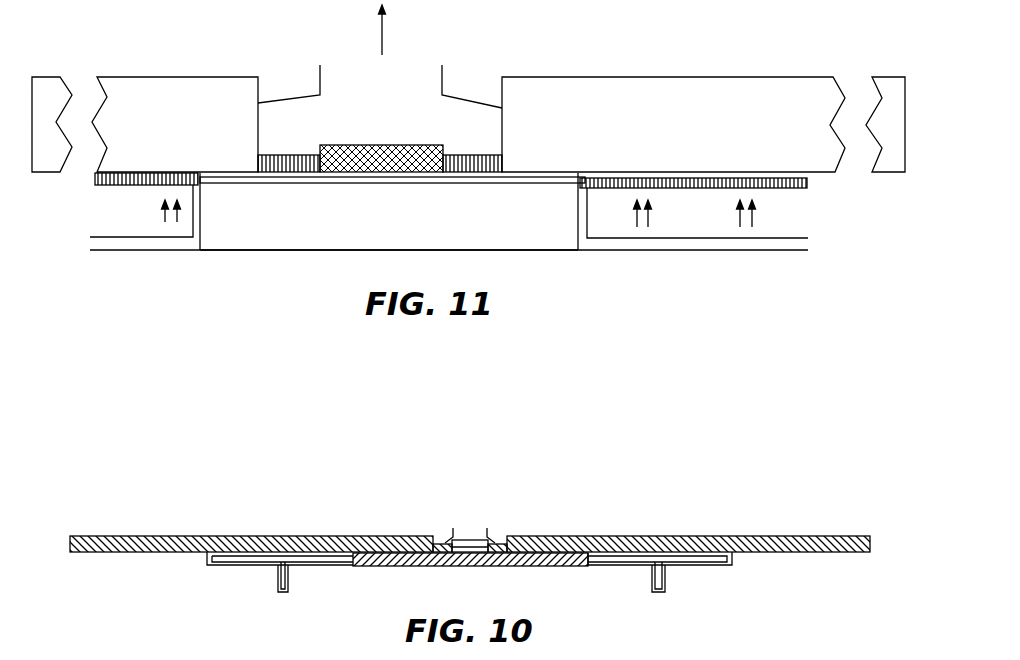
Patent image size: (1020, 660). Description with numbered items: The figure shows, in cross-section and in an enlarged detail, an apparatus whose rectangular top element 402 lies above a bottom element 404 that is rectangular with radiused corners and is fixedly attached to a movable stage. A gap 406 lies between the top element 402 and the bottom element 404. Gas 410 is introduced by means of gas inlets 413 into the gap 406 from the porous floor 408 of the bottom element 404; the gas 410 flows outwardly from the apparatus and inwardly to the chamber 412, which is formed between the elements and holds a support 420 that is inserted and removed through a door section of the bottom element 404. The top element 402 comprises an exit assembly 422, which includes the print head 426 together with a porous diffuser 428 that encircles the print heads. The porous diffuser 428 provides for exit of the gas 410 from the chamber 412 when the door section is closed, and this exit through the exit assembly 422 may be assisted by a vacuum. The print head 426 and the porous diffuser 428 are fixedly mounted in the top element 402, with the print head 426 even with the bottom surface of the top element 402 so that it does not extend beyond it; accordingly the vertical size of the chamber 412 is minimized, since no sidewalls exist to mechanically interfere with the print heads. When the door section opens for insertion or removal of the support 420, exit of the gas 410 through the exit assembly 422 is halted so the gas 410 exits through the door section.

In FIG. 11, the top element 402 is at (143, 76).
In FIG. 10, the top element 402 is at (90, 535).
In FIG. 11, the bottom element 404 is at (150, 252).
In FIG. 10, the bottom element 404 is at (207, 557).
In FIG. 11, the gap 406 is at (812, 178).
In FIG. 10, the gap 406 is at (735, 558).
In FIG. 11, the porous floor 408 is at (808, 190).
In FIG. 10, the porous floor 408 is at (710, 565).
In FIG. 11, the gas 410 is at (382, 35).
In FIG. 11, the chamber 412 is at (513, 175).
In FIG. 10, the gas inlets 413 is at (665, 592).
In FIG. 11, the support 420 is at (332, 183).
In FIG. 10, the support 420 is at (365, 567).
In FIG. 11, the exit assembly 422 is at (482, 70).
In FIG. 10, the exit assembly 422 is at (502, 527).
In FIG. 11, the print head 426 is at (403, 145).
In FIG. 10, the print head 426 is at (470, 539).
In FIG. 11, the porous diffuser 428 is at (292, 153).
In FIG. 10, the porous diffuser 428 is at (450, 542).